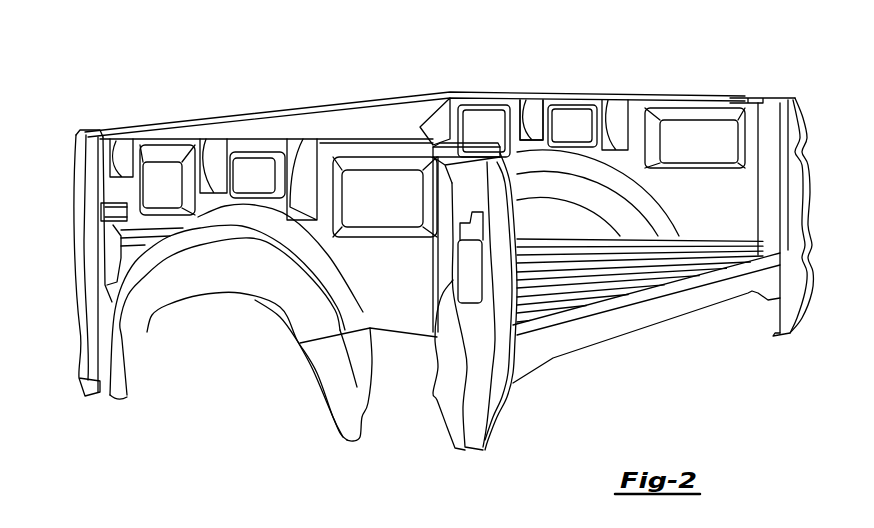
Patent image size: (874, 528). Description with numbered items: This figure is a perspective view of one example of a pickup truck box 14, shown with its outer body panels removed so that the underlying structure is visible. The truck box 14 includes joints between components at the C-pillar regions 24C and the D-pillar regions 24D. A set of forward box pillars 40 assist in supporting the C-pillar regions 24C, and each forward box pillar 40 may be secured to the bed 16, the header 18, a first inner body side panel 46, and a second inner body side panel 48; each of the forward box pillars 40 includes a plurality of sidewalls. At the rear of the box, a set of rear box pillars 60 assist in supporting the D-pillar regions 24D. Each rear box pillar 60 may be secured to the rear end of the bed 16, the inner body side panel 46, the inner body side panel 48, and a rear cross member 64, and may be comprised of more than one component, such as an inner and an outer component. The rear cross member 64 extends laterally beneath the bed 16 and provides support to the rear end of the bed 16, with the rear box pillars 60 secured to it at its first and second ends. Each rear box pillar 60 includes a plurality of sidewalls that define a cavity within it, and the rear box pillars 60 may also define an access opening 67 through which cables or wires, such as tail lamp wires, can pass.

The truck box 14 is at (622, 53).
The bed 16 is at (683, 258).
The header 18 is at (240, 132).
The C-pillar region 24C is at (86, 131).
The D-pillar region 24D is at (449, 160).
The forward box pillar 40 is at (90, 222).
The first inner body side panel 46 is at (130, 172).
The second inner body side panel 48 is at (537, 113).
The rear box pillar 60 is at (768, 177).
The rear cross member 64 is at (620, 317).
The access opening 67 is at (437, 337).